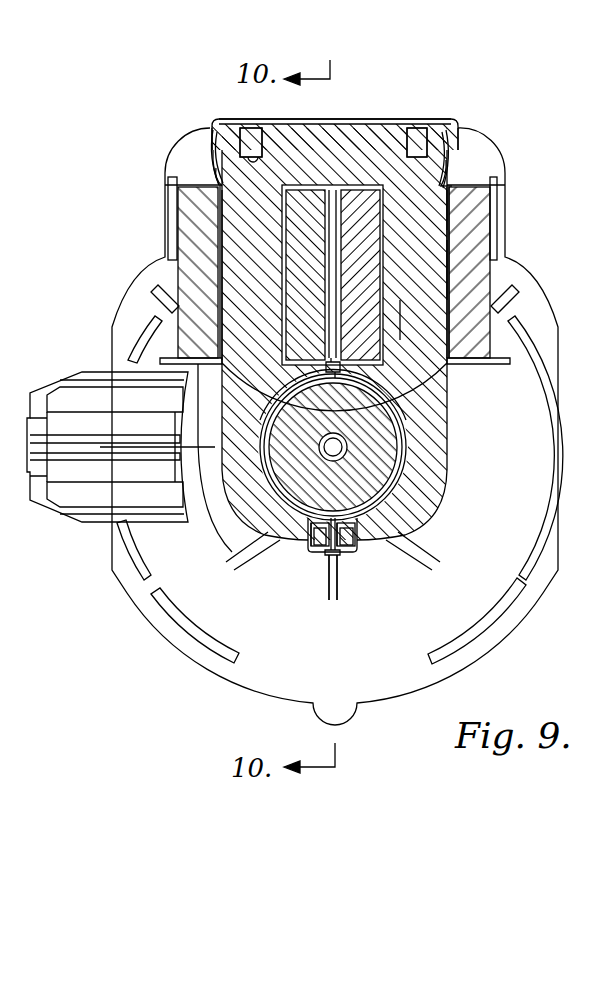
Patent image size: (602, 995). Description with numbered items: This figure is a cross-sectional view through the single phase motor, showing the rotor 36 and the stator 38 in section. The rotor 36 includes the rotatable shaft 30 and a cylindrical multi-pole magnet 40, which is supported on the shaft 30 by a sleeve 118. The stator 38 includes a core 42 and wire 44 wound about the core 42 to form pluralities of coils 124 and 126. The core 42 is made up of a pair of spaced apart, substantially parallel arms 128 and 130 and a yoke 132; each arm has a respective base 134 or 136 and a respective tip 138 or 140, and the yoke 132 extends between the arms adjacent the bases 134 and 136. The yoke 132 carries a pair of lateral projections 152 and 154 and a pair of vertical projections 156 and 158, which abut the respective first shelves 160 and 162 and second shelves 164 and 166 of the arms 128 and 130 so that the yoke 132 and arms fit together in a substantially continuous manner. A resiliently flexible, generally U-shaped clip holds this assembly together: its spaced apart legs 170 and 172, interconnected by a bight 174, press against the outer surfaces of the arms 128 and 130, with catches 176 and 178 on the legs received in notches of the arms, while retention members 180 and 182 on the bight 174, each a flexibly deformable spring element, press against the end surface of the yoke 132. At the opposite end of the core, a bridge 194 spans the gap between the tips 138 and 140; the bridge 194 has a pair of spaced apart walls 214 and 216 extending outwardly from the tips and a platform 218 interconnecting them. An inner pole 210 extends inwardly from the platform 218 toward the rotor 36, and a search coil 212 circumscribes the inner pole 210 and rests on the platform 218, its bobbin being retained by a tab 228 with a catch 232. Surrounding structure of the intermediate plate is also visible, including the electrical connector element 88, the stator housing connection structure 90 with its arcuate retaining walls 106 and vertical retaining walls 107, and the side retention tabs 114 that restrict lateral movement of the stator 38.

The rotatable shaft 30 is at (385, 426).
The rotor 36 is at (402, 403).
The stator 38 is at (452, 220).
The magnet 40 is at (380, 470).
The core 42 is at (432, 207).
The wire 44 is at (200, 250).
The electrical connector element 88 is at (45, 400).
The stator housing connection structure 90 is at (152, 590).
The arcuate retaining walls 106 is at (138, 557).
The vertical retaining walls 107 is at (172, 190).
The side retention tabs 114 is at (216, 160).
The sleeve 118 is at (338, 447).
The coils 124 is at (478, 290).
The coils 126 is at (205, 270).
The arm 128 is at (430, 322).
The arm 130 is at (245, 305).
The yoke 132 is at (342, 150).
The base 134 is at (430, 252).
The base 136 is at (247, 225).
The tip 138 is at (388, 526).
The tip 140 is at (277, 520).
The lateral projection 152 is at (470, 127).
The lateral projection 154 is at (205, 125).
The vertical projection 156 is at (452, 170).
The vertical projection 158 is at (268, 189).
The first shelf 160 is at (420, 155).
The first shelf 162 is at (262, 150).
The second shelf 164 is at (396, 195).
The second shelf 166 is at (283, 195).
The leg 170 is at (453, 160).
The leg 172 is at (214, 132).
The bight 174 is at (388, 122).
The catch 176 is at (455, 190).
The catch 178 is at (218, 178).
The retention member 180 is at (412, 157).
The retention member 182 is at (247, 145).
The bridge 194 is at (372, 562).
The inner pole 210 is at (333, 528).
The search coil 212 is at (378, 514).
The wall 214 is at (368, 550).
The wall 216 is at (310, 540).
The platform 218 is at (312, 550).
The tab 228 is at (323, 562).
The catch 232 is at (338, 565).